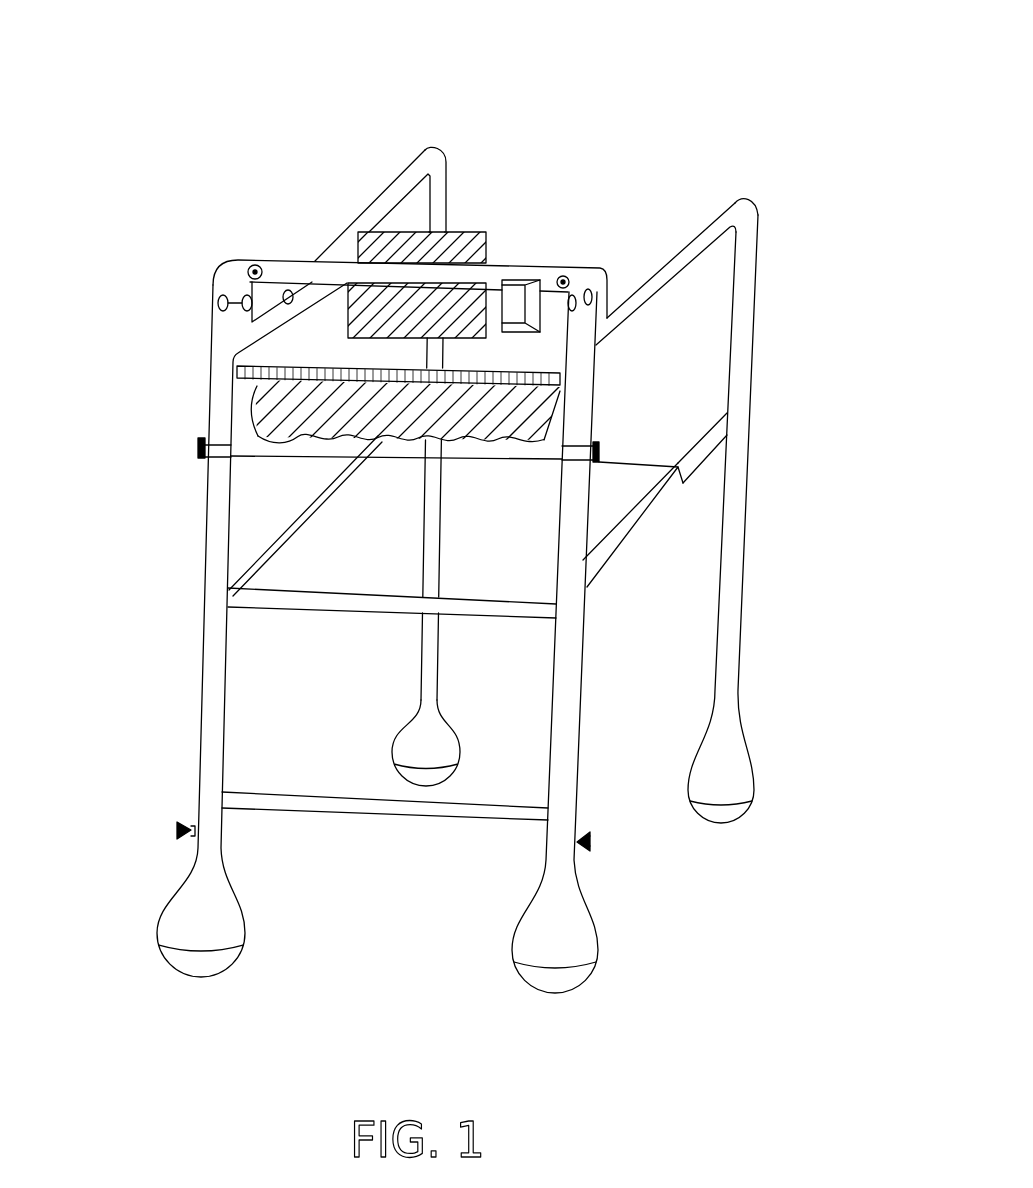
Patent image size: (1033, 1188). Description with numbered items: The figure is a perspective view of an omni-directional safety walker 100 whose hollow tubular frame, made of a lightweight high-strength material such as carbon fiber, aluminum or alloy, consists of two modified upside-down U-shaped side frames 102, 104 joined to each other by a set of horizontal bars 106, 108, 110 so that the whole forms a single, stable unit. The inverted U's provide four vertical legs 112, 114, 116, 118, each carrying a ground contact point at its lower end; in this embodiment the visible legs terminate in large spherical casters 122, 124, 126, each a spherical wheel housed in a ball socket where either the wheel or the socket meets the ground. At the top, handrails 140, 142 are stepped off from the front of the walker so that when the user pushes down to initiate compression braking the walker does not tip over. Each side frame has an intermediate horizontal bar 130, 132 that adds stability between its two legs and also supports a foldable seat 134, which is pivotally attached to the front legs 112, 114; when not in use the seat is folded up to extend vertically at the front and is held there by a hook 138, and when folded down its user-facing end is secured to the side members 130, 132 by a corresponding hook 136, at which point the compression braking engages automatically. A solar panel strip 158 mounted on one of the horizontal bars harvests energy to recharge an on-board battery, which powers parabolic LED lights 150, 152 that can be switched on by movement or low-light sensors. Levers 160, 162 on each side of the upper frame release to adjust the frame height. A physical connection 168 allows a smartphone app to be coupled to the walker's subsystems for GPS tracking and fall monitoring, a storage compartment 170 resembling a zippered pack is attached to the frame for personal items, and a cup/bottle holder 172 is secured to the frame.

The omni-directional safety walker 100 is at (661, 74).
The inverted U-shaped side frame 102 is at (438, 132).
The inverted U-shaped side frame 104 is at (742, 178).
The horizontal bar 106 is at (290, 262).
The horizontal bar 108 is at (367, 613).
The horizontal bar 110 is at (272, 792).
The front leg 112 is at (199, 678).
The front leg 114 is at (585, 707).
The leg 116 is at (455, 617).
The leg 118 is at (742, 612).
The spherical caster 122 is at (612, 943).
The spherical caster 124 is at (458, 725).
The spherical caster 126 is at (768, 755).
The intermediate horizontal bar 130 is at (355, 447).
The intermediate horizontal bar 132 is at (708, 430).
The foldable seat 134 is at (250, 586).
The hook 136 is at (683, 483).
The hook 138 is at (218, 303).
The handrail 140 is at (377, 202).
The handrail 142 is at (688, 245).
The LED light 150 is at (249, 270).
The LED light 152 is at (565, 277).
The solar panel strip 158 is at (240, 376).
The lever 160 is at (198, 450).
The lever 162 is at (600, 455).
The physical connection 168 is at (350, 258).
The storage compartment 170 is at (255, 404).
The cup/bottle holder 172 is at (521, 280).